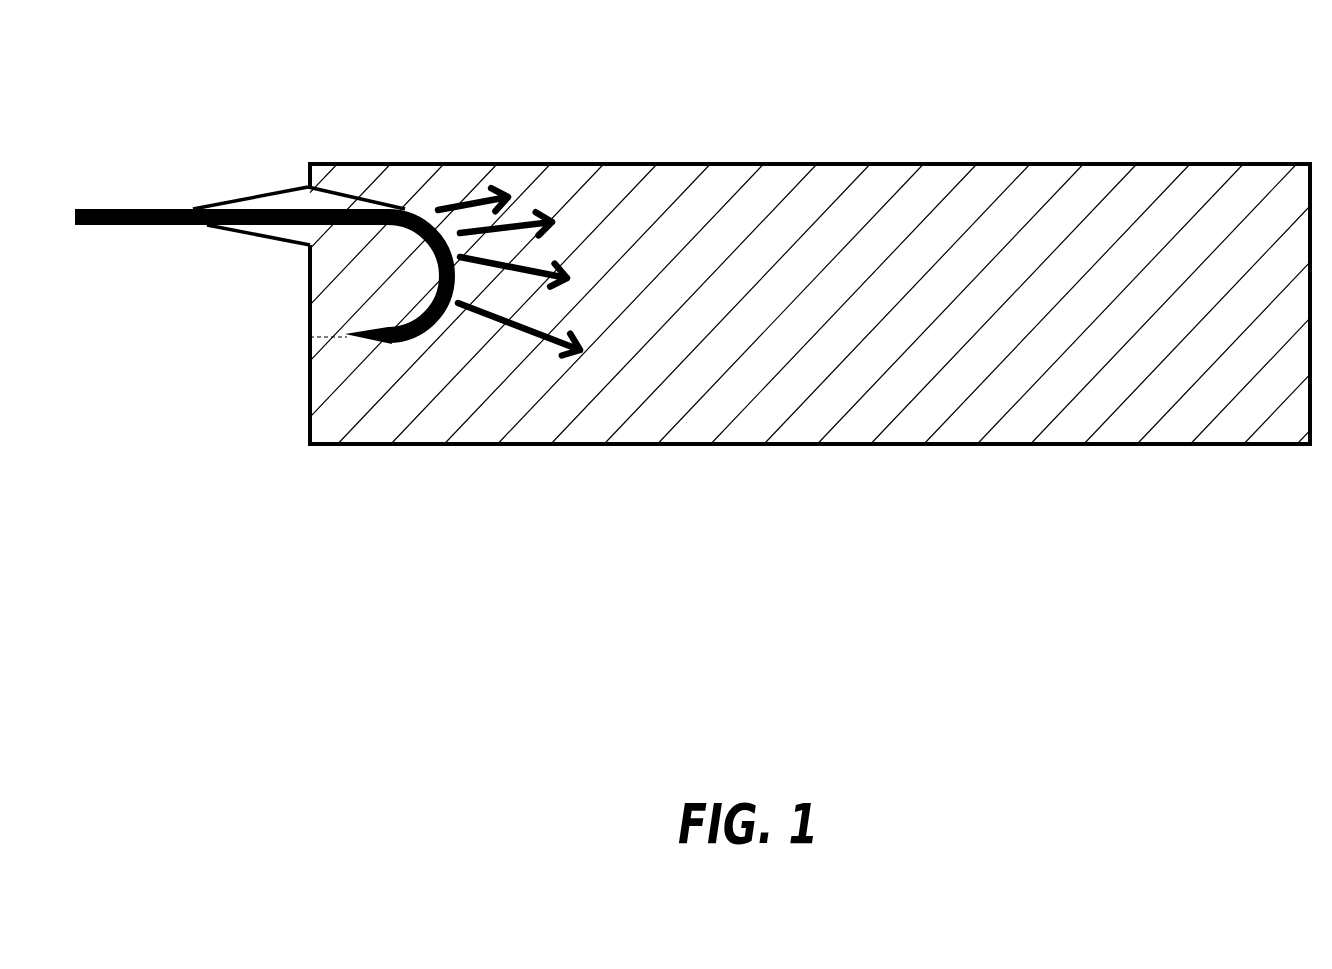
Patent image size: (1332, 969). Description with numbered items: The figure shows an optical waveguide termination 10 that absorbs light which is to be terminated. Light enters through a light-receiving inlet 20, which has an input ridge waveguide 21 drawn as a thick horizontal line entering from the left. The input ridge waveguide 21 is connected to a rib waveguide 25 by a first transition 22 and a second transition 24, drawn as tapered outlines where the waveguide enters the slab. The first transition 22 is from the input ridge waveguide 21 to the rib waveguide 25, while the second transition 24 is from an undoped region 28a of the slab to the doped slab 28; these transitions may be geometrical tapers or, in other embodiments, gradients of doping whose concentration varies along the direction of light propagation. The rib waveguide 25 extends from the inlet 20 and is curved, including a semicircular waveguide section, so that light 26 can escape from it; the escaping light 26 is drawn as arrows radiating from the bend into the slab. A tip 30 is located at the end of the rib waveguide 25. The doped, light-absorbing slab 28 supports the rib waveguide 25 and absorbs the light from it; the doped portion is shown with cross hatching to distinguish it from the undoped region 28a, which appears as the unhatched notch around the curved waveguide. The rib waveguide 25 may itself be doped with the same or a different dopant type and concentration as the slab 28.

The optical waveguide termination 10 is at (358, 49).
The light-receiving inlet 20 is at (208, 96).
The input ridge waveguide 21 is at (103, 226).
The first transition 22 is at (242, 200).
The second transition 24 is at (327, 199).
The rib waveguide 25 is at (442, 310).
The light 26 is at (520, 330).
The doped, light-absorbing slab 28 is at (788, 198).
The undoped region 28a is at (363, 268).
The tip 30 is at (340, 337).